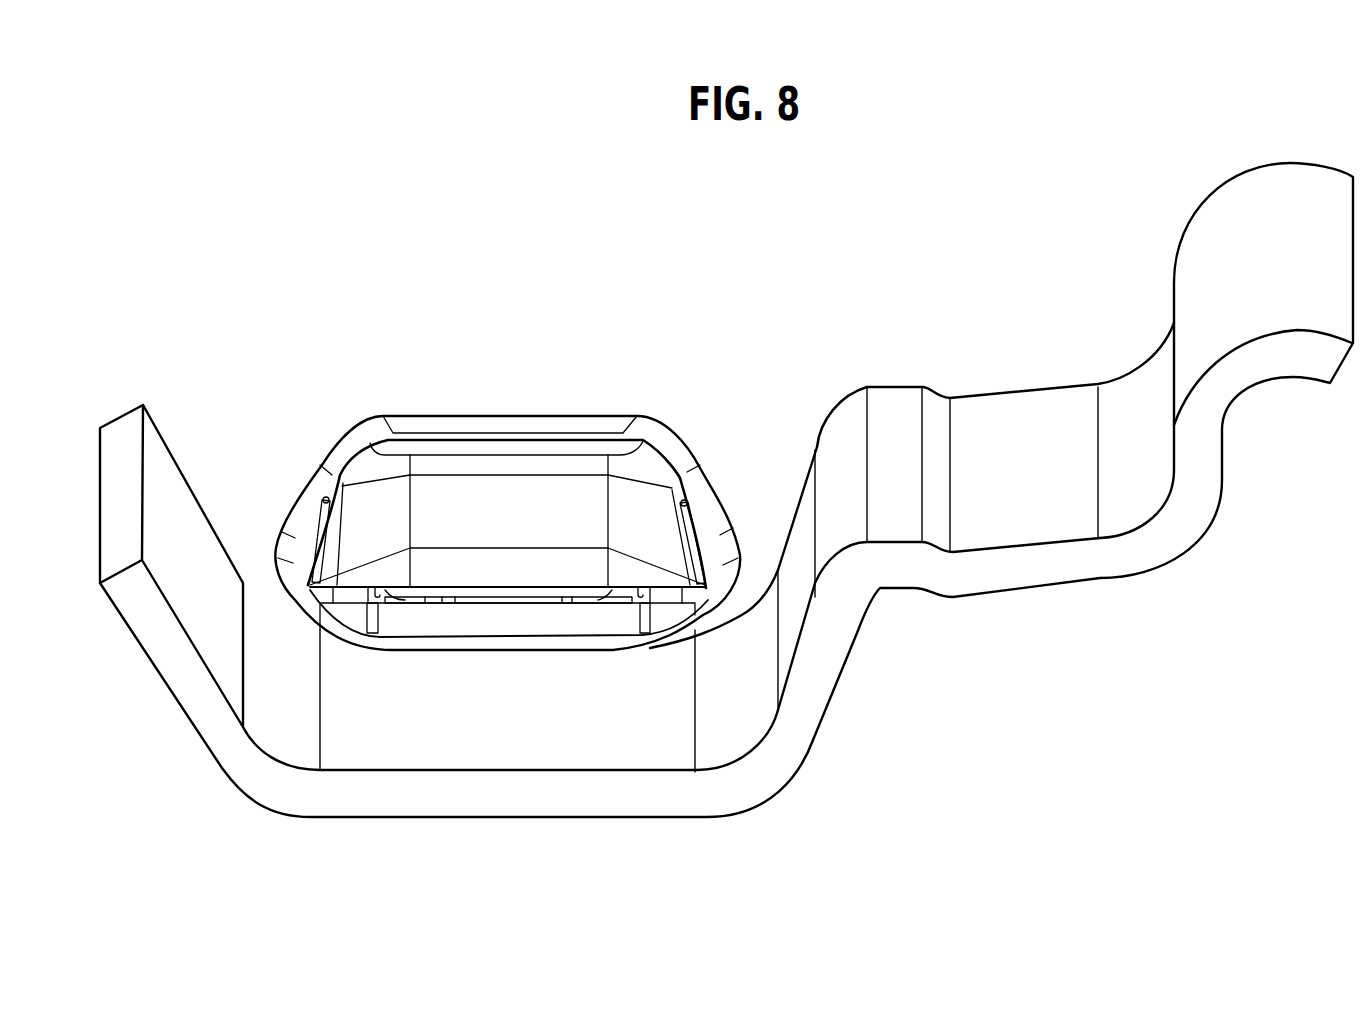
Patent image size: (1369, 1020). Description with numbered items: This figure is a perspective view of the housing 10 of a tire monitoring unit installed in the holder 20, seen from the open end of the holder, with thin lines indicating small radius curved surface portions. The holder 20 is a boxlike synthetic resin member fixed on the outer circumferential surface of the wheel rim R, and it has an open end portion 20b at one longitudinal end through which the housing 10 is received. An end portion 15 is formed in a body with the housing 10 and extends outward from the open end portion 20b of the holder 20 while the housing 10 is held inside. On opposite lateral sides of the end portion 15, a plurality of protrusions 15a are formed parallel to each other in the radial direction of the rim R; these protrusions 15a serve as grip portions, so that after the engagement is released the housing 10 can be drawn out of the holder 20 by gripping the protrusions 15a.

The holder 20 is at (507, 473).
The open end portion 20b is at (433, 433).
The housing 10 is at (578, 428).
The end portion 15 is at (635, 497).
The protrusions 15a is at (325, 545).
The rim R is at (127, 508).